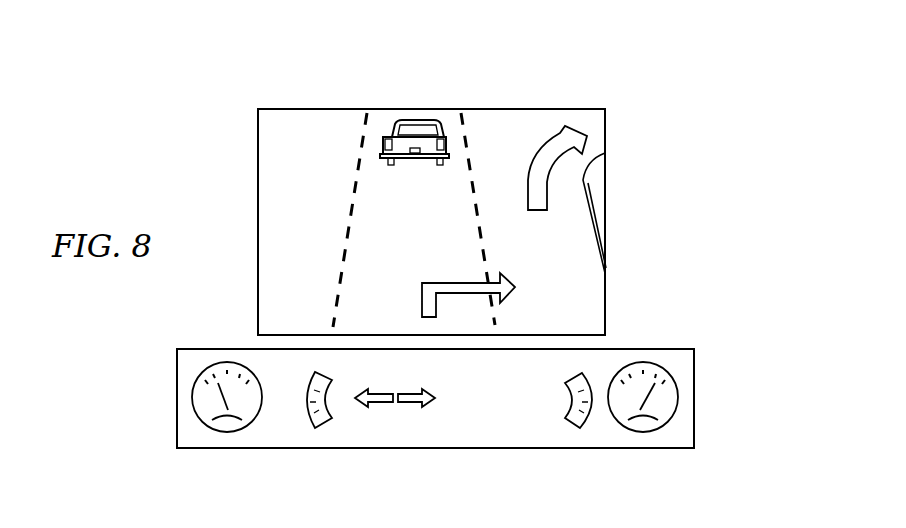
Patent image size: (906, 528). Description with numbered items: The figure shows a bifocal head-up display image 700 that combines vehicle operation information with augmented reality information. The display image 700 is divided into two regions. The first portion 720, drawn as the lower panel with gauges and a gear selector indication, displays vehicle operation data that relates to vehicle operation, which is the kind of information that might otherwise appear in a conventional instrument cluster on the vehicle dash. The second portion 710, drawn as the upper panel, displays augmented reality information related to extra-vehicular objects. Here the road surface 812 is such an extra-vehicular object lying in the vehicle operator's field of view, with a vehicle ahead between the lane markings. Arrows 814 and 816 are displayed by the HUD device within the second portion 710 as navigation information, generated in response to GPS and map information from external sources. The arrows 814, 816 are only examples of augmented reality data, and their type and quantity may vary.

The display image 700 is at (756, 139).
The second portion 710 is at (606, 199).
The first portion 720 is at (694, 367).
The road surface 812 is at (432, 229).
The arrow 814 is at (421, 306).
The arrow 816 is at (541, 212).